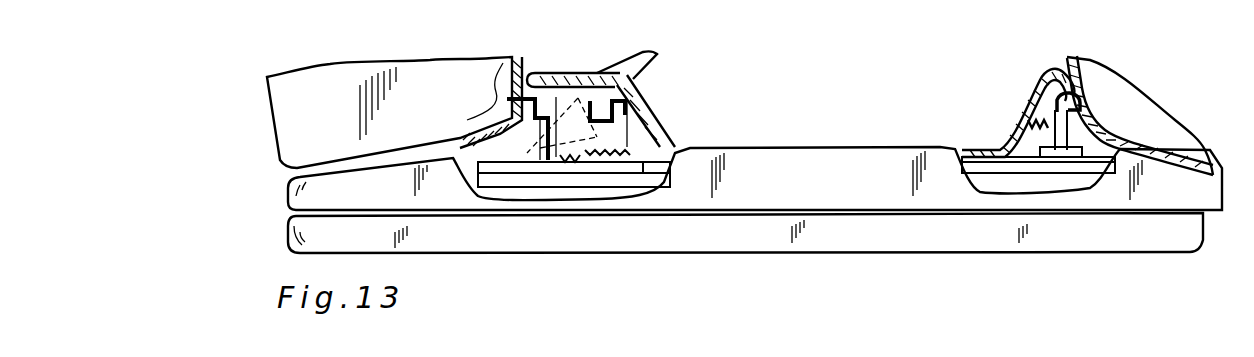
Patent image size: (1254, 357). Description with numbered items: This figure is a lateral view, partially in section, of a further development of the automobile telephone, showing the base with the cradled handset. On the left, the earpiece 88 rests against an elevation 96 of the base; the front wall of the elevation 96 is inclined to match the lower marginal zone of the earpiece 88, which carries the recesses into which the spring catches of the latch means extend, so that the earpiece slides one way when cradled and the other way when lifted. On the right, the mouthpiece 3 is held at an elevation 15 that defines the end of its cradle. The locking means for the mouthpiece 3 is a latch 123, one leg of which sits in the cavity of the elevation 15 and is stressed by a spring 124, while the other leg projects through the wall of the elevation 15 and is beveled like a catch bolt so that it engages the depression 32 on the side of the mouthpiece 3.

The earpiece 88 is at (338, 100).
The elevation 96 is at (573, 75).
The elevation 15 is at (1050, 70).
The latch 123 is at (1067, 100).
The spring 124 is at (1060, 113).
The depression 32 is at (1090, 87).
The mouthpiece 3 is at (1143, 108).